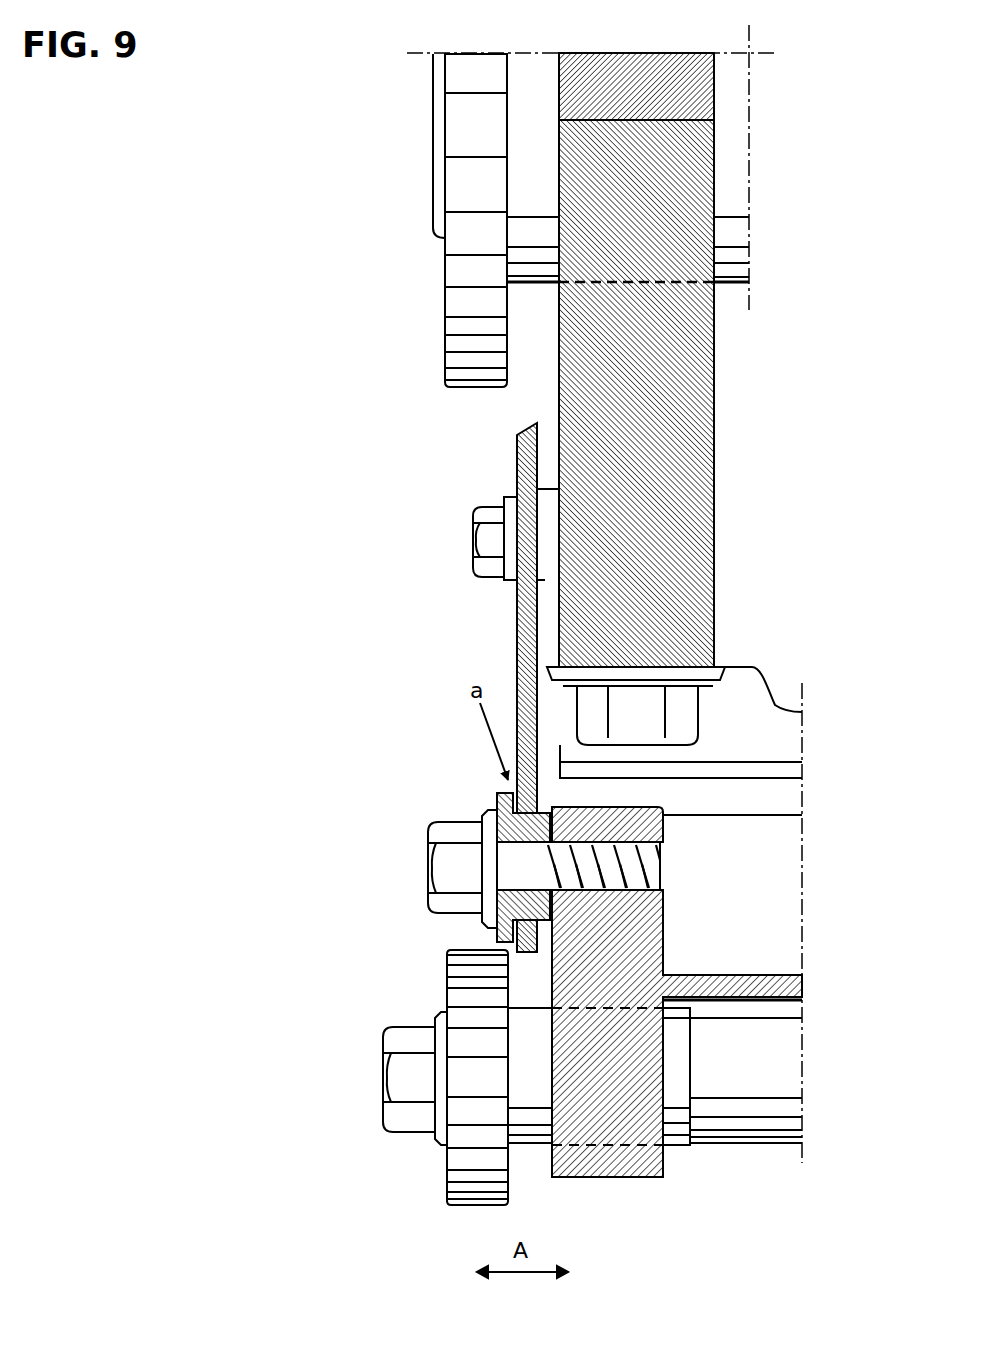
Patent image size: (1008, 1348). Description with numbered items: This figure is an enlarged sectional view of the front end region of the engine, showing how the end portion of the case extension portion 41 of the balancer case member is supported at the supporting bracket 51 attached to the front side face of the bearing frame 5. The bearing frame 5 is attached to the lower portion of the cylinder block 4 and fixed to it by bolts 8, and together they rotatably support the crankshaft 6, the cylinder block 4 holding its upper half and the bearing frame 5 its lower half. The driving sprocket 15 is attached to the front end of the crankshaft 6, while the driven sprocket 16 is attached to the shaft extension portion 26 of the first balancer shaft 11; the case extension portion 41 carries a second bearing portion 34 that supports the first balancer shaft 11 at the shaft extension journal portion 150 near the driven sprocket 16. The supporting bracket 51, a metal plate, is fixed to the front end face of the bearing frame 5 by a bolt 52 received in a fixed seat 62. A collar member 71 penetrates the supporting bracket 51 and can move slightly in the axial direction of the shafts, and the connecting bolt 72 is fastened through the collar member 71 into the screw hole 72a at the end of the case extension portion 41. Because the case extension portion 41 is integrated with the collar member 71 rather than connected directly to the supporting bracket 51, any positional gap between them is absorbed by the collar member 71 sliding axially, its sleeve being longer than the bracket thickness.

The cylinder block 4 is at (710, 85).
The bearing frame 5 is at (707, 427).
The crankshaft 6 is at (737, 198).
The bolts 8 is at (685, 717).
The first balancer shaft 11 is at (793, 1067).
The driving sprocket 15 is at (447, 325).
The driven sprocket 16 is at (445, 983).
The shaft extension portion 26 is at (747, 1120).
The second bearing portion 34 is at (623, 1147).
The case extension portion 41 is at (793, 880).
The supporting bracket 51 is at (527, 625).
The bolt 52 is at (482, 538).
The fixed seat 62 is at (548, 503).
The collar member 71 is at (507, 823).
The connecting bolt 72 is at (445, 867).
The screw hole 72a is at (633, 890).
The shaft extension journal portion 150 is at (528, 1132).